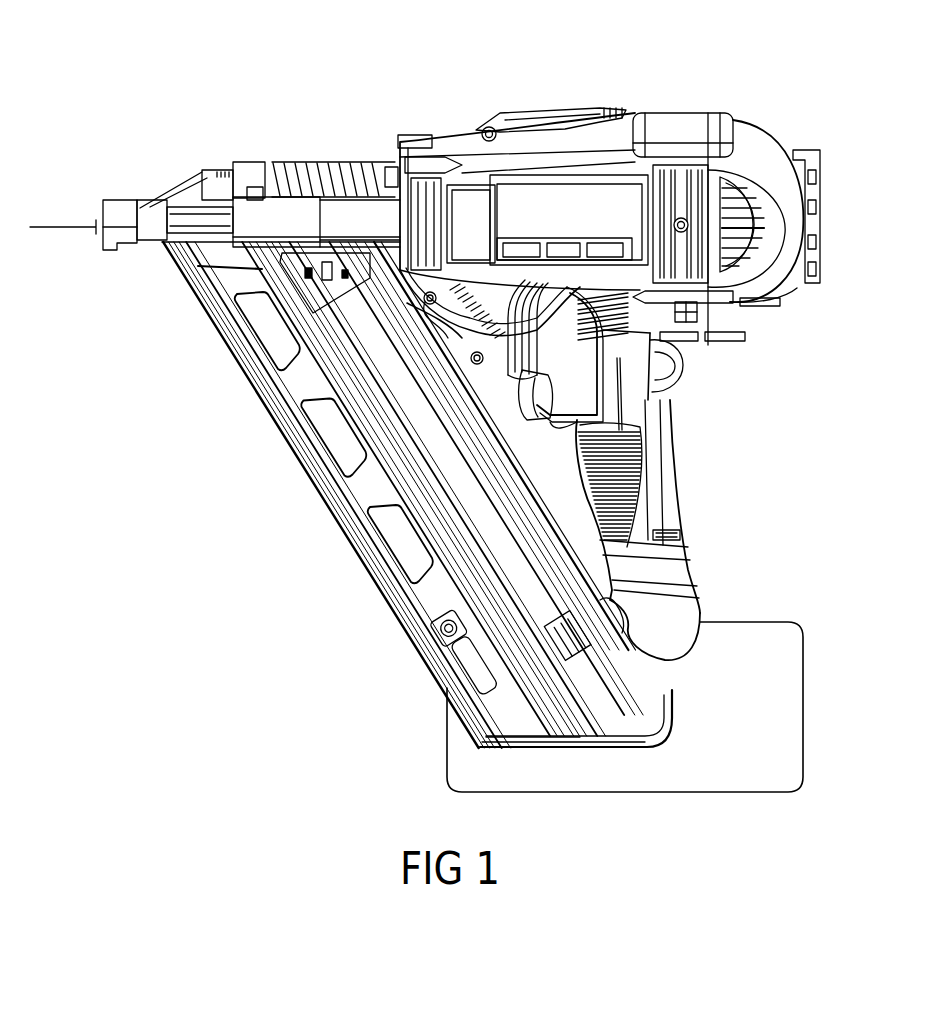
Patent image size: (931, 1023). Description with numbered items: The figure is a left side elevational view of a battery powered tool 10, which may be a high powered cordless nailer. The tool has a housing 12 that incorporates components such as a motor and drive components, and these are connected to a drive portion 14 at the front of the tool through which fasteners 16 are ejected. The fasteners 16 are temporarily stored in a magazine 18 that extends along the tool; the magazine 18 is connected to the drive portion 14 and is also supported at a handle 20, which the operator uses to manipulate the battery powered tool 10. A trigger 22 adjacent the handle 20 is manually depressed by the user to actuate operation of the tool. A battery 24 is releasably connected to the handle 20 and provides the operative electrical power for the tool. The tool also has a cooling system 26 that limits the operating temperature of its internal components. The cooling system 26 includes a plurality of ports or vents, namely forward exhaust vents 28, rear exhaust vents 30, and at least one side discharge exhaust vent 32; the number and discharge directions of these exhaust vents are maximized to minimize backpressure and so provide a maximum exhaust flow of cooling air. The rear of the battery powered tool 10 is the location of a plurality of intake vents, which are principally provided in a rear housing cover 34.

The battery powered tool 10 is at (763, 62).
The housing 12 is at (457, 145).
The drive portion 14 is at (152, 218).
The fasteners 16 is at (73, 227).
The magazine 18 is at (367, 483).
The handle 20 is at (637, 398).
The trigger 22 is at (529, 422).
The battery 24 is at (750, 783).
The cooling system 26 is at (520, 389).
The forward exhaust vents 28 is at (462, 326).
The rear exhaust vents 30 is at (658, 368).
The side discharge exhaust vent 32 is at (793, 288).
The rear housing cover 34 is at (767, 145).